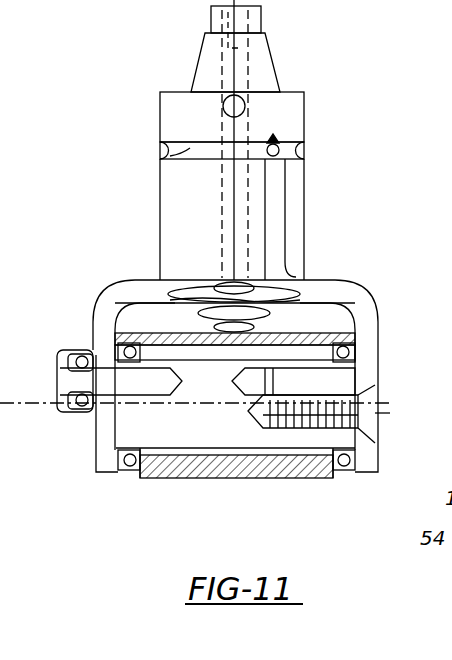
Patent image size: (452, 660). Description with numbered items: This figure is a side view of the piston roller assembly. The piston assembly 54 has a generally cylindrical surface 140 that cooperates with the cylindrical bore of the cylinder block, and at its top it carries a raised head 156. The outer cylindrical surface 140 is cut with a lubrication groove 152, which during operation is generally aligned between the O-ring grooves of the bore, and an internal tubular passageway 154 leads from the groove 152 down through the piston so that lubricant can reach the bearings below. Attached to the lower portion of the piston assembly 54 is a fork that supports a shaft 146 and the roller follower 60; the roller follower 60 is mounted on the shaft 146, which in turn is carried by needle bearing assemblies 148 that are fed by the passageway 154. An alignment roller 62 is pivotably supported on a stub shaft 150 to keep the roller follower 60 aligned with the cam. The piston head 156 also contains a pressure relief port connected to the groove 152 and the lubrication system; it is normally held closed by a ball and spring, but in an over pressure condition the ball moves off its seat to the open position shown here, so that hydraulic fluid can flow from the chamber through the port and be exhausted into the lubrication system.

The piston assembly 54 is at (325, 102).
The raised head 156 is at (290, 76).
The cylindrical surface 140 is at (305, 188).
The lubrication groove 152 is at (190, 149).
The internal tubular passageway 154 is at (270, 215).
The alignment roller 62 is at (93, 348).
The stub shaft 150 is at (83, 387).
The shaft 146 is at (310, 440).
The roller follower 60 is at (240, 480).
The needle bearing assemblies 148 is at (125, 477).